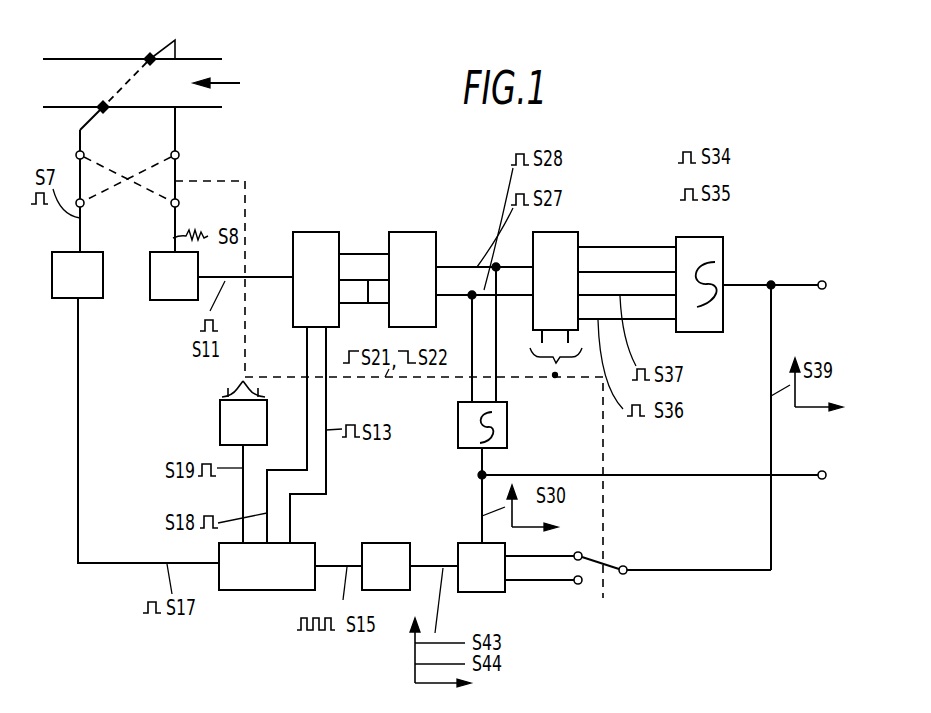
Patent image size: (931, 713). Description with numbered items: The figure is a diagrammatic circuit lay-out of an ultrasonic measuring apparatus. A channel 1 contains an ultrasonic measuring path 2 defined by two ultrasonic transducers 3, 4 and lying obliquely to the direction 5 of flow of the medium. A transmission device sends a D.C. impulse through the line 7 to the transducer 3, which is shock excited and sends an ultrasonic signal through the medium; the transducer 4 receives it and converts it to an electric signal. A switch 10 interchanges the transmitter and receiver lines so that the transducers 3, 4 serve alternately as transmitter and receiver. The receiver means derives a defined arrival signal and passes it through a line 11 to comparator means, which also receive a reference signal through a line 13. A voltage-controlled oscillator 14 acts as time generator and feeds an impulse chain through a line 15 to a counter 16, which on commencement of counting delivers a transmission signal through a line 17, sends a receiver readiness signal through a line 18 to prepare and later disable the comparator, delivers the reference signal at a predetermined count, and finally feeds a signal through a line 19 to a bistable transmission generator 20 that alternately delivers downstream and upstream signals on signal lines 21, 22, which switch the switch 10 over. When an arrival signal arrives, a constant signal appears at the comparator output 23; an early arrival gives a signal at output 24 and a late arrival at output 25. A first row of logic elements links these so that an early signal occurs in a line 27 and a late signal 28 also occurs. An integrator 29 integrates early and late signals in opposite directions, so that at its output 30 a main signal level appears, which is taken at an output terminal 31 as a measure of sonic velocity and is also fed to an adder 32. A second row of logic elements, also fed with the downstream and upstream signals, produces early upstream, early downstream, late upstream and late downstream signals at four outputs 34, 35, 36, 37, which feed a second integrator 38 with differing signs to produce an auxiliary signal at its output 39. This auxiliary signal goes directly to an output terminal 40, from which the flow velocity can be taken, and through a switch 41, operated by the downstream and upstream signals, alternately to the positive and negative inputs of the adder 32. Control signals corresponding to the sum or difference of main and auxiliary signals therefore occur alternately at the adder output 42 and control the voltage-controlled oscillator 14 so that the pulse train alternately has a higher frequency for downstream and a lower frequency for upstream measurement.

The channel 1 is at (68, 72).
The ultrasonic measuring path 2 is at (125, 82).
The ultrasonic transducer 3 is at (100, 104).
The ultrasonic transducer 4 is at (152, 58).
The direction of flow 5 is at (230, 82).
The line 7 is at (80, 235).
The switch 10 is at (130, 180).
The line 11 is at (263, 276).
The line 13 is at (326, 478).
The voltage-controlled oscillator 14 is at (397, 578).
The line 15 is at (337, 565).
The counter 16 is at (278, 578).
The line 17 is at (112, 564).
The line 18 is at (267, 527).
The line 19 is at (244, 498).
The bistable transmission generator 20 is at (254, 437).
The signal line 21 is at (224, 394).
The signal line 22 is at (263, 395).
The output 23 is at (369, 282).
The output 24 is at (348, 254).
The output 25 is at (354, 280).
The line 27 is at (441, 294).
The late signal 28 is at (457, 266).
The integrator 29 is at (507, 428).
The output 30 is at (478, 461).
The output terminal 31 is at (656, 479).
The adder 32 is at (483, 592).
The output 34 is at (594, 248).
The output 35 is at (607, 272).
The output 36 is at (660, 320).
The output 37 is at (628, 295).
The integrator 38 is at (718, 271).
The output 39 is at (752, 288).
The output terminal 40 is at (817, 284).
The switch 41 is at (672, 589).
The output 42 is at (430, 565).